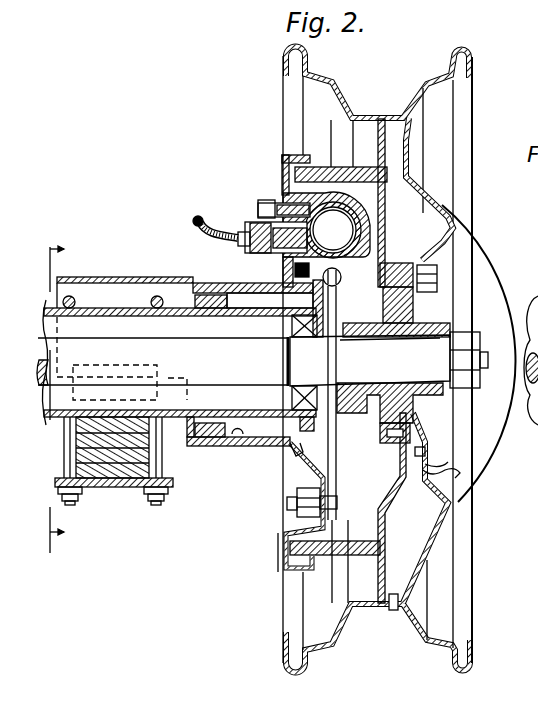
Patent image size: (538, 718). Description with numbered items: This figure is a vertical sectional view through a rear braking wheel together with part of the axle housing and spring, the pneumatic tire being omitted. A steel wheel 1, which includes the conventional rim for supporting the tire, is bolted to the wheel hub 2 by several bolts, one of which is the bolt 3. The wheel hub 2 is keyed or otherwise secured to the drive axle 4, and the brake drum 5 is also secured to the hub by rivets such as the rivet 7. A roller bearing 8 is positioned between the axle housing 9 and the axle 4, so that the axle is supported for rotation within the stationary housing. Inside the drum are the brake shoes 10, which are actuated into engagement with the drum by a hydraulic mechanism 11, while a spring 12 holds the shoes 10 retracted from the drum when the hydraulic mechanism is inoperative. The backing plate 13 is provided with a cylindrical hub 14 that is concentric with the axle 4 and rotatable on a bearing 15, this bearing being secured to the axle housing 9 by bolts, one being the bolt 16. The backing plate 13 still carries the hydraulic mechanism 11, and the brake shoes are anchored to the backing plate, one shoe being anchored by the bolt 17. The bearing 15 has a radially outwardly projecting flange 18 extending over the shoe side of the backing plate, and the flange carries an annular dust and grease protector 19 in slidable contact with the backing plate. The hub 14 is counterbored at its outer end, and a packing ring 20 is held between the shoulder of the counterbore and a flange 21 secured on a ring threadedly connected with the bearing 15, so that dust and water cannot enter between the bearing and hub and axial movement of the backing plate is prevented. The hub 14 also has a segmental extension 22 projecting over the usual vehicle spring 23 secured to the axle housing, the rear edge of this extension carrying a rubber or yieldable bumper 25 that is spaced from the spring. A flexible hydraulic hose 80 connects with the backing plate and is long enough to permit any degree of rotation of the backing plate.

The steel wheel 1 is at (409, 130).
The wheel hub 2 is at (422, 357).
The bolt 3 is at (437, 252).
The drive axle 4 is at (526, 277).
The brake drum 5 is at (350, 173).
The rivet 7 is at (400, 435).
The roller bearing 8 is at (285, 338).
The axle housing 9 is at (125, 310).
The brake shoes 10 is at (366, 260).
The hydraulic mechanism 11 is at (306, 191).
The spring 12 is at (341, 282).
The backing plate 13 is at (285, 173).
The cylindrical hub 14 is at (247, 443).
The bearing 15 is at (222, 444).
The bolt 16 is at (308, 436).
The bolt 17 is at (290, 513).
The flange 18 is at (290, 468).
The annular dust and grease protector 19 is at (288, 450).
The packing ring 20 is at (205, 287).
The flange 21 is at (196, 289).
The extension 22 is at (100, 278).
The vehicle spring 23 is at (118, 467).
The bumper 25 is at (175, 378).
The flexible hydraulic hose 80 is at (214, 213).